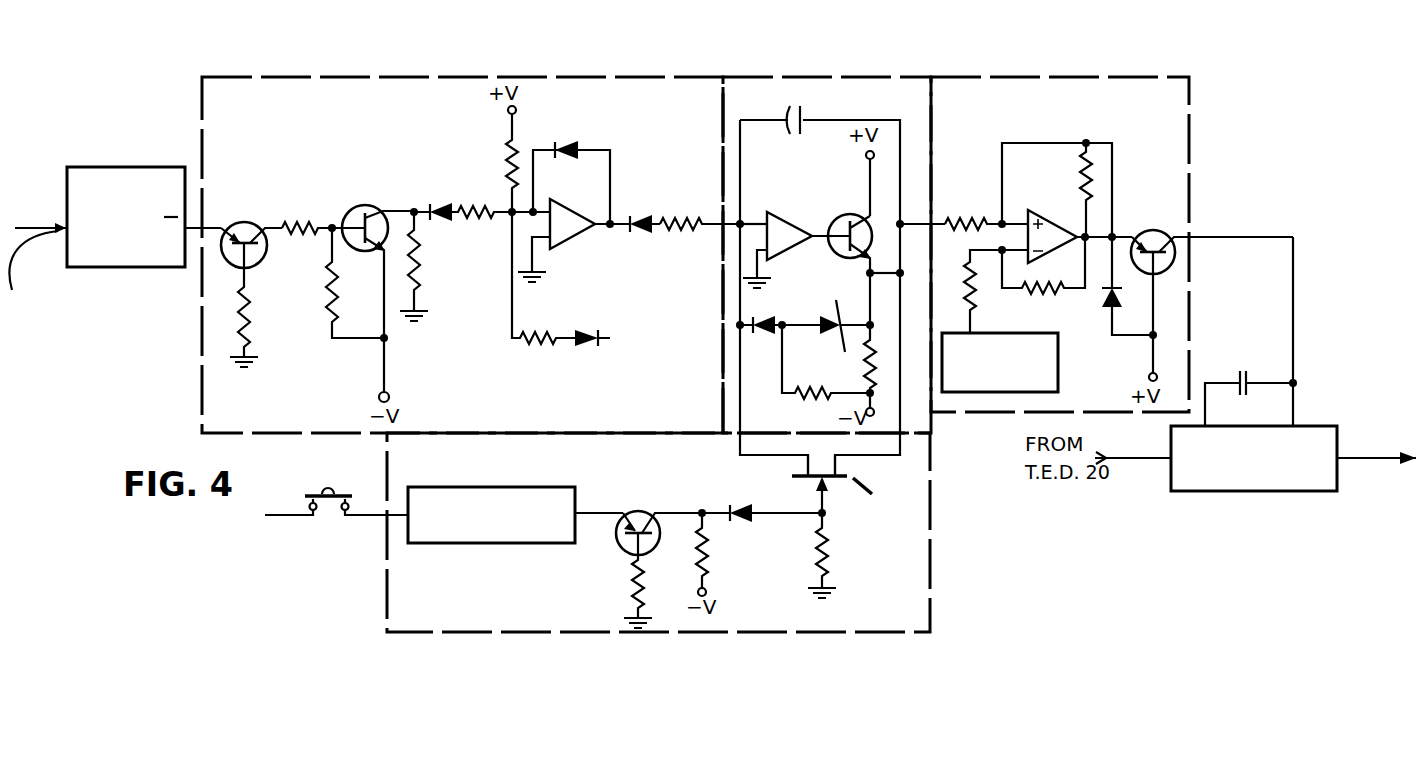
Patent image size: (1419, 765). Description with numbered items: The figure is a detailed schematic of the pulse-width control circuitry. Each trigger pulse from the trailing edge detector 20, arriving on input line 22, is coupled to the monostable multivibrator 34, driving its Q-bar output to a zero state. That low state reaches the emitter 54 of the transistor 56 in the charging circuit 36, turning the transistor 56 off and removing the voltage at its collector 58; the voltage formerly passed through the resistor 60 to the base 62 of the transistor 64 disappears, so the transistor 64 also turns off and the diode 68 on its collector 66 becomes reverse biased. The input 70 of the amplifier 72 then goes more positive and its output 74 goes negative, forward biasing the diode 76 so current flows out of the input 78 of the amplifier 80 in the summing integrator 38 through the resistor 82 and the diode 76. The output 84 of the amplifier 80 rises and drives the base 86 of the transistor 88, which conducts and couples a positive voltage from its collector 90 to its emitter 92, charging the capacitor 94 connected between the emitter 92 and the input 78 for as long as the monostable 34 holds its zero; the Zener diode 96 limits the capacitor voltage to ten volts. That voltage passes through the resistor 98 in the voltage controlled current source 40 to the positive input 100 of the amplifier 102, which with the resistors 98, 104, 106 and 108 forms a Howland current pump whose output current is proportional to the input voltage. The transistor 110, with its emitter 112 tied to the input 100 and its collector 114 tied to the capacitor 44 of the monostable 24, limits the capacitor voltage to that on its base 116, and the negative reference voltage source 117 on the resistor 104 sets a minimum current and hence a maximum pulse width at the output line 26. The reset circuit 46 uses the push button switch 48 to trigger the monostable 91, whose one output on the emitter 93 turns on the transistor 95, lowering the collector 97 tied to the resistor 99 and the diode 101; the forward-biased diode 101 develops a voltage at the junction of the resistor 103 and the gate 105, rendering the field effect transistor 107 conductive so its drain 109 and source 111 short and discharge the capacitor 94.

The trailing edge detector 20 is at (104, 309).
The input line from T.E.D. 22 is at (56, 230).
The monostable 24 is at (1298, 477).
The output line 26 is at (1357, 452).
The monostable multivibrator 34 is at (150, 168).
The charging circuit 36 is at (582, 84).
The summing integrator 38 is at (887, 88).
The voltage controlled current source 40 is at (1115, 88).
The capacitor 44 is at (1238, 375).
The reset circuit 46 is at (916, 553).
The push button switch 48 is at (308, 496).
The emitter 54 is at (243, 236).
The transistor 56 is at (256, 222).
The collector 58 is at (266, 243).
The resistor 60 is at (304, 222).
The base 62 is at (358, 205).
The transistor 64 is at (357, 241).
The collector 66 is at (375, 215).
The diode 68 is at (438, 197).
The input 70 is at (545, 208).
The amplifier 72 is at (572, 232).
The output 74 is at (612, 222).
The diode 76 is at (640, 245).
The input 78 is at (768, 218).
The amplifier 80 is at (784, 252).
The resistor 82 is at (686, 221).
The output 84 is at (786, 247).
The base 86 is at (838, 230).
The transistor 88 is at (847, 222).
The collector 90 is at (859, 222).
The emitter 92 is at (863, 258).
The capacitor 94 is at (810, 112).
The Zener diode 96 is at (838, 335).
The resistor 98 is at (965, 221).
The positive input 100 is at (1020, 218).
The amplifier 102 is at (1050, 228).
The resistor 104 is at (968, 268).
The resistor 106 is at (1045, 292).
The resistor 108 is at (1091, 183).
The transistor 110 is at (1170, 260).
The emitter 112 is at (1138, 240).
The collector 114 is at (1160, 235).
The base 116 is at (1150, 338).
The negative reference voltage source 117 is at (1005, 336).
The monostable multivibrator 91 is at (540, 535).
The emitter 93 is at (626, 512).
The transistor 95 is at (641, 510).
The collector 97 is at (656, 512).
The resistor 99 is at (706, 551).
The diode 101 is at (745, 526).
The resistor 103 is at (828, 549).
The gate 105 is at (826, 489).
The field effect transistor 107 is at (853, 493).
The drain 109 is at (838, 462).
The source 111 is at (803, 463).